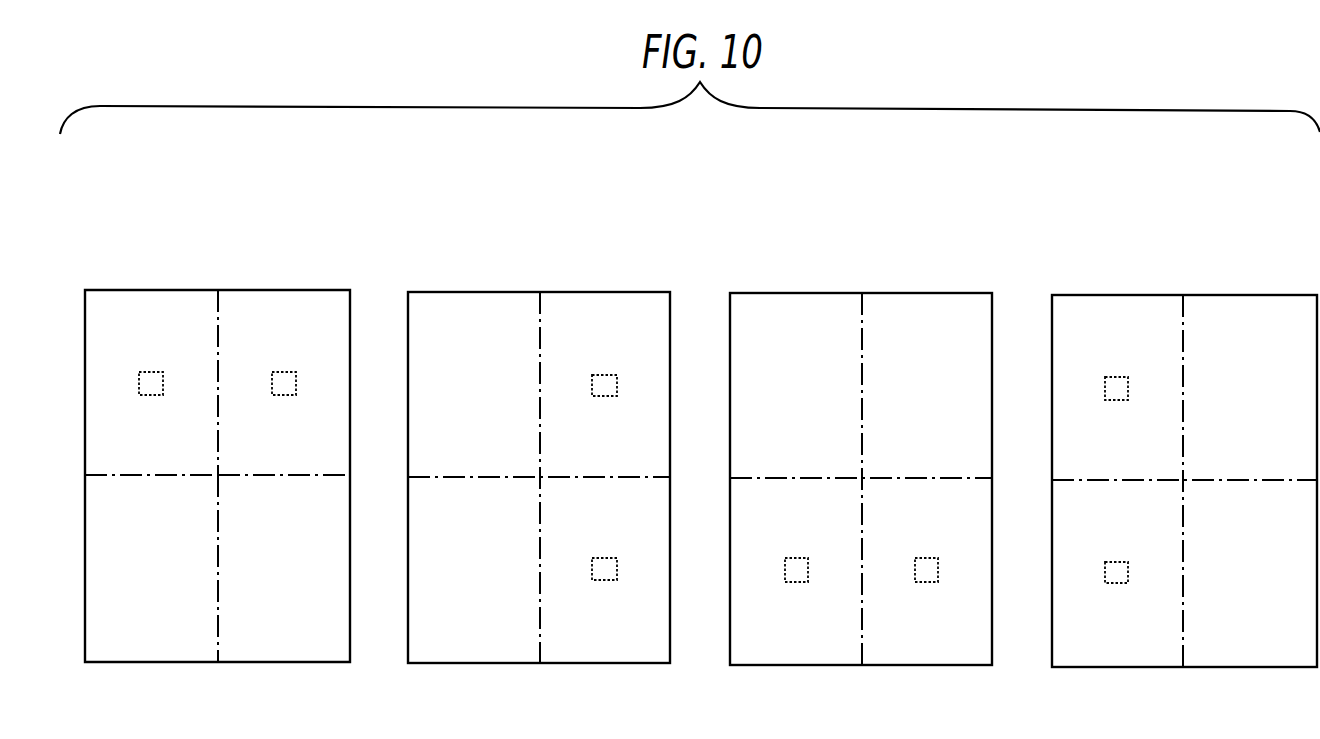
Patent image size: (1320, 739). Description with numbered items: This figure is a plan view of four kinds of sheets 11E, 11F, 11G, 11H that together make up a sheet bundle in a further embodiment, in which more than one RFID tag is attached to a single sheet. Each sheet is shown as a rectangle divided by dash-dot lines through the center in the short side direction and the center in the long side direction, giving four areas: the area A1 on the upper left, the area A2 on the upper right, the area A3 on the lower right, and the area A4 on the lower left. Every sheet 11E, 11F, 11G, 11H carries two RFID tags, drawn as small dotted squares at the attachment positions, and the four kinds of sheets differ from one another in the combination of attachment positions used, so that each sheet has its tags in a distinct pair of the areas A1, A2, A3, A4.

The sheet 11E is at (212, 212).
The sheet 11F is at (529, 217).
The sheet 11G is at (863, 217).
The sheet 11H is at (1180, 218).
The area A1 is at (161, 289).
The area A2 is at (273, 289).
The area A3 is at (298, 650).
The area A4 is at (158, 652).